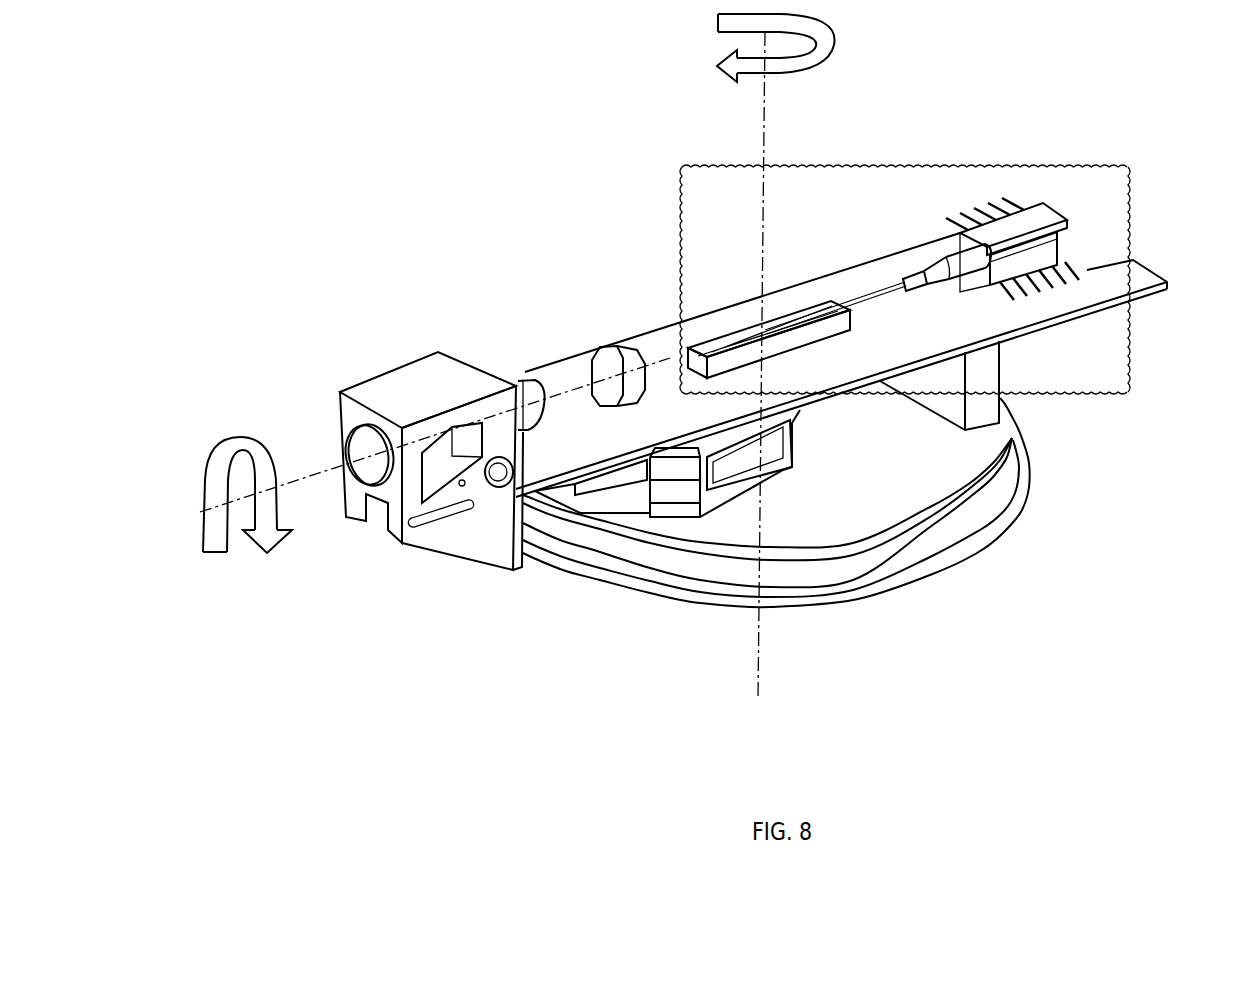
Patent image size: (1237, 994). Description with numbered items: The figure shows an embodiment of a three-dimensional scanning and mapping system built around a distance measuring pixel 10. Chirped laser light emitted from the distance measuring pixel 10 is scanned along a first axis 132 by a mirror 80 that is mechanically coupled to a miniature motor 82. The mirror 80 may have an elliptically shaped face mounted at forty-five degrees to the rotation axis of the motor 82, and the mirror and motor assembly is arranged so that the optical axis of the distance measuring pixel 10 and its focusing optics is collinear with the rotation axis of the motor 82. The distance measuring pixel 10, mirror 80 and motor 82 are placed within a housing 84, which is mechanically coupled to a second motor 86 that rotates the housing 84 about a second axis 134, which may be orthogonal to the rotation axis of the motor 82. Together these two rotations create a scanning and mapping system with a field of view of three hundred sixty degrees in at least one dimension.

The distance measuring pixel 10 is at (1085, 372).
The mirror 80 is at (526, 390).
The miniature motor 82 is at (440, 393).
The housing 84 is at (892, 467).
The second motor 86 is at (717, 474).
The first axis 132 is at (300, 480).
The second axis 134 is at (765, 102).